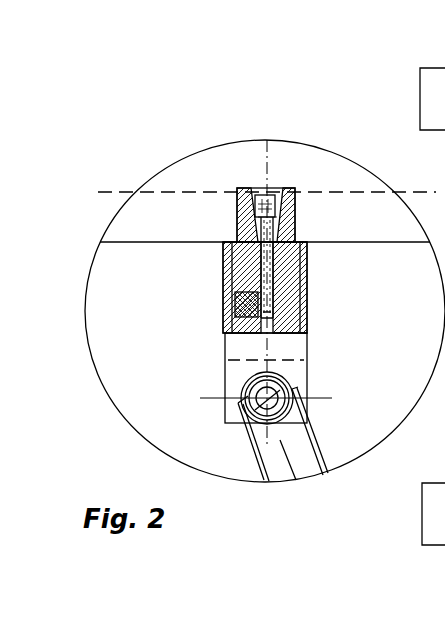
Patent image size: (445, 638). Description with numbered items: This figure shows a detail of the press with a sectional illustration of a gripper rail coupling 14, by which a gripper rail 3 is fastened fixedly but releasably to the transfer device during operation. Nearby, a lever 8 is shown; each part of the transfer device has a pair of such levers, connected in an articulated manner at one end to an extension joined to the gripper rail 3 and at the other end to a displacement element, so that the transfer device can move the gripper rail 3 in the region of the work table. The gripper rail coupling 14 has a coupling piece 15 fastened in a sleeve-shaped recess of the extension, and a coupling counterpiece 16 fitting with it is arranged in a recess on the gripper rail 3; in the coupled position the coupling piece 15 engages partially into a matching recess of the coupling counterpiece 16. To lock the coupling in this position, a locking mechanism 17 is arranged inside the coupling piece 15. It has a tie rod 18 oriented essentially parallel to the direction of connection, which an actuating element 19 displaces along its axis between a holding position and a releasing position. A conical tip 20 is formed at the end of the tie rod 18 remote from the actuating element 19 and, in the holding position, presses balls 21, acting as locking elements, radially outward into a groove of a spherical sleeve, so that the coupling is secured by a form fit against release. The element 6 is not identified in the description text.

The gripper rail 3 is at (368, 215).
The adjacent component (partial) 6 is at (444, 68).
The lever 8 is at (258, 459).
The gripper rail coupling 14 is at (143, 313).
The coupling piece 15 is at (293, 268).
The coupling counterpiece 16 is at (295, 210).
The locking mechanism 17 is at (259, 150).
The tie rod 18 is at (266, 285).
The actuating element 19 is at (268, 310).
The conical tip 20 is at (256, 219).
The balls 21 is at (240, 210).